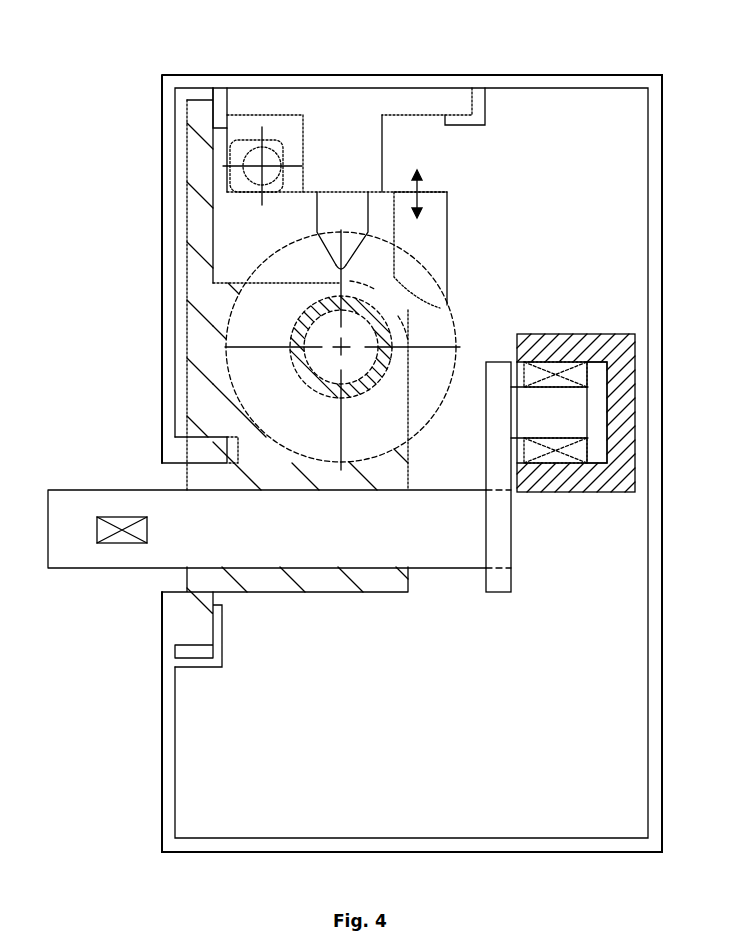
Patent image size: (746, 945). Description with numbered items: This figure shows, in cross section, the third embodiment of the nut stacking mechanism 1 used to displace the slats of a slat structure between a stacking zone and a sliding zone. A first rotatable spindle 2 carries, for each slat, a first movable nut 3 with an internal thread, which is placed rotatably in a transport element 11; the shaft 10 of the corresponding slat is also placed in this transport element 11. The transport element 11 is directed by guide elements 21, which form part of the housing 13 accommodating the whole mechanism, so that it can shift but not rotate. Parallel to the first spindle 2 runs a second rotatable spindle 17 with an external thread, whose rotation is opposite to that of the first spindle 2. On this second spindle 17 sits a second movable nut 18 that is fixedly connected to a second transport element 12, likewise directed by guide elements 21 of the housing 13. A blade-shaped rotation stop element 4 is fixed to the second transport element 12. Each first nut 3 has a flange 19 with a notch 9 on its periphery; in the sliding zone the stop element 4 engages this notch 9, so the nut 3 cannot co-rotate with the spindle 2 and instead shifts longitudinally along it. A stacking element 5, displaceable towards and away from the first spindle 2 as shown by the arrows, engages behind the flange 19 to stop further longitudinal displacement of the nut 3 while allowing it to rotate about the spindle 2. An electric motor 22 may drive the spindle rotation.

The nut stacking mechanism 1 is at (98, 162).
The first rotatable spindle 2 is at (322, 336).
The first movable nut 3 is at (298, 368).
The blade-shaped rotation stop element 4 is at (340, 213).
The stacking element 5 is at (432, 195).
The notch 9 is at (329, 253).
The shaft 10 is at (175, 513).
The transport element 11 is at (202, 573).
The second transport element 12 is at (355, 105).
The housing 13 is at (546, 78).
The second rotatable spindle 17 is at (252, 152).
The second movable nut 18 is at (280, 139).
The flange 19 is at (242, 330).
The guide elements 21 is at (176, 108).
The motor 22 is at (607, 350).